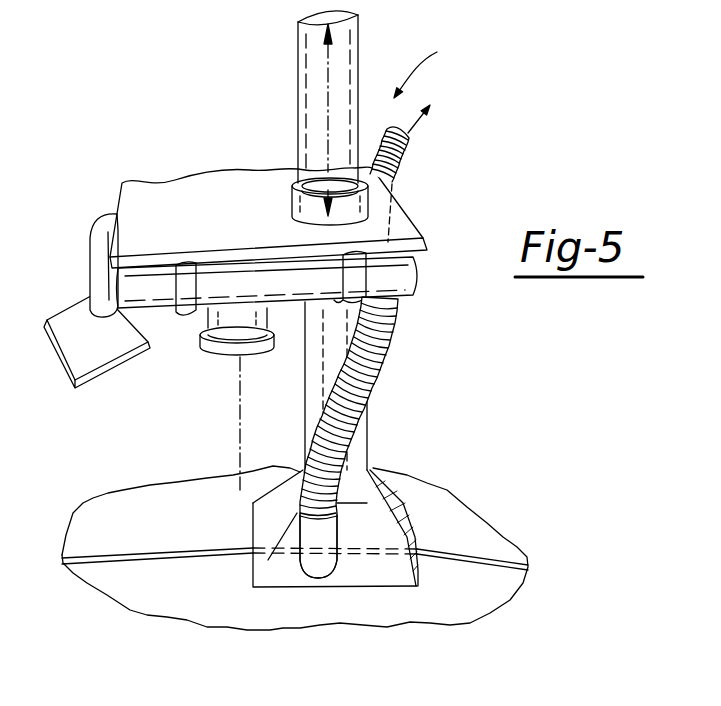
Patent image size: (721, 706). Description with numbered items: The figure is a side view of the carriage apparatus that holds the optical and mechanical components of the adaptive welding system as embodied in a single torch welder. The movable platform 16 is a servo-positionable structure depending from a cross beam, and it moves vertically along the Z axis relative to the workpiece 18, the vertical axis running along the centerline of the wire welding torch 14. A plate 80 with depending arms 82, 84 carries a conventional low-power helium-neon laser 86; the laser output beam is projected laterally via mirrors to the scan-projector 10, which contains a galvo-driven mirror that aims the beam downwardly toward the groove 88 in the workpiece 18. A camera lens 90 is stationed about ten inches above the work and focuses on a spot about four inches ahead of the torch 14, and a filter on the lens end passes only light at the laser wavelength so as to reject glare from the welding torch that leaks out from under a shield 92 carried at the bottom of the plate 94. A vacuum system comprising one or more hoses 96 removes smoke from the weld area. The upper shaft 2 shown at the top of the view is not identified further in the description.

The shaft 2 is at (328, 108).
The laser-projector 10 is at (212, 516).
The wire welding torch 14 is at (368, 467).
The movable platform 16 is at (432, 88).
The workpiece 18 is at (470, 578).
The plate 80 is at (408, 247).
The depending arm 82 is at (185, 277).
The depending arm 84 is at (360, 275).
The helium-neon laser 86 is at (279, 289).
The groove 88 is at (165, 553).
The camera lens 90 is at (215, 348).
The shield 92 is at (402, 530).
The plate 94 is at (358, 428).
The hose 96 is at (377, 345).